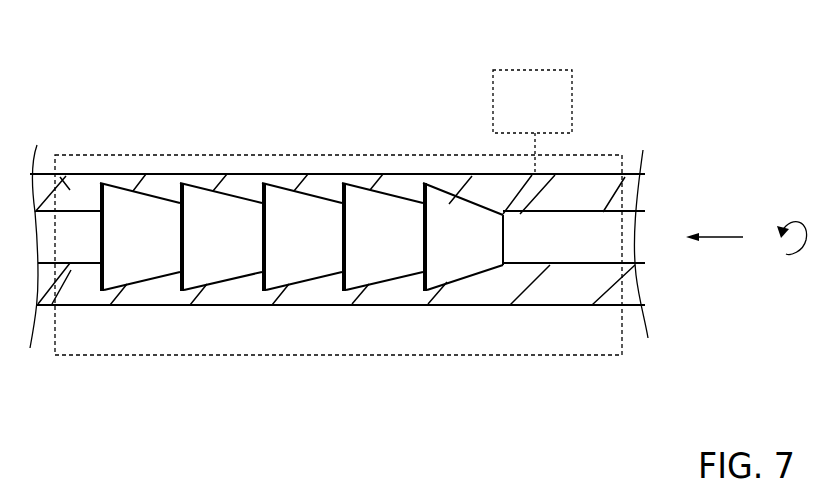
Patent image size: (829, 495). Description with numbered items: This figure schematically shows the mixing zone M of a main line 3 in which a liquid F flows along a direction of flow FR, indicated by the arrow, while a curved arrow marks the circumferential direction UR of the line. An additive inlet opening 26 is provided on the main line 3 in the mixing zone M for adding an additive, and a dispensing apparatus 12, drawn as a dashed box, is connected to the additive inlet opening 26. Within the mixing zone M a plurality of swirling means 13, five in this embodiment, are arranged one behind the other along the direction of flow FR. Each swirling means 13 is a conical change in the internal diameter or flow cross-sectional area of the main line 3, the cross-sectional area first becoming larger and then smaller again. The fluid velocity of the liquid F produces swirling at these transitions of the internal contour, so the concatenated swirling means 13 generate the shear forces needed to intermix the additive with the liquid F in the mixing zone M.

The swirling means 13 is at (245, 190).
The additive inlet opening 26 is at (530, 173).
The dispensing apparatus 12 is at (533, 87).
The mixing zone M is at (605, 150).
The liquid F is at (372, 258).
The main line 3 is at (573, 250).
The direction of flow FR is at (720, 237).
The circumferential direction UR is at (786, 254).